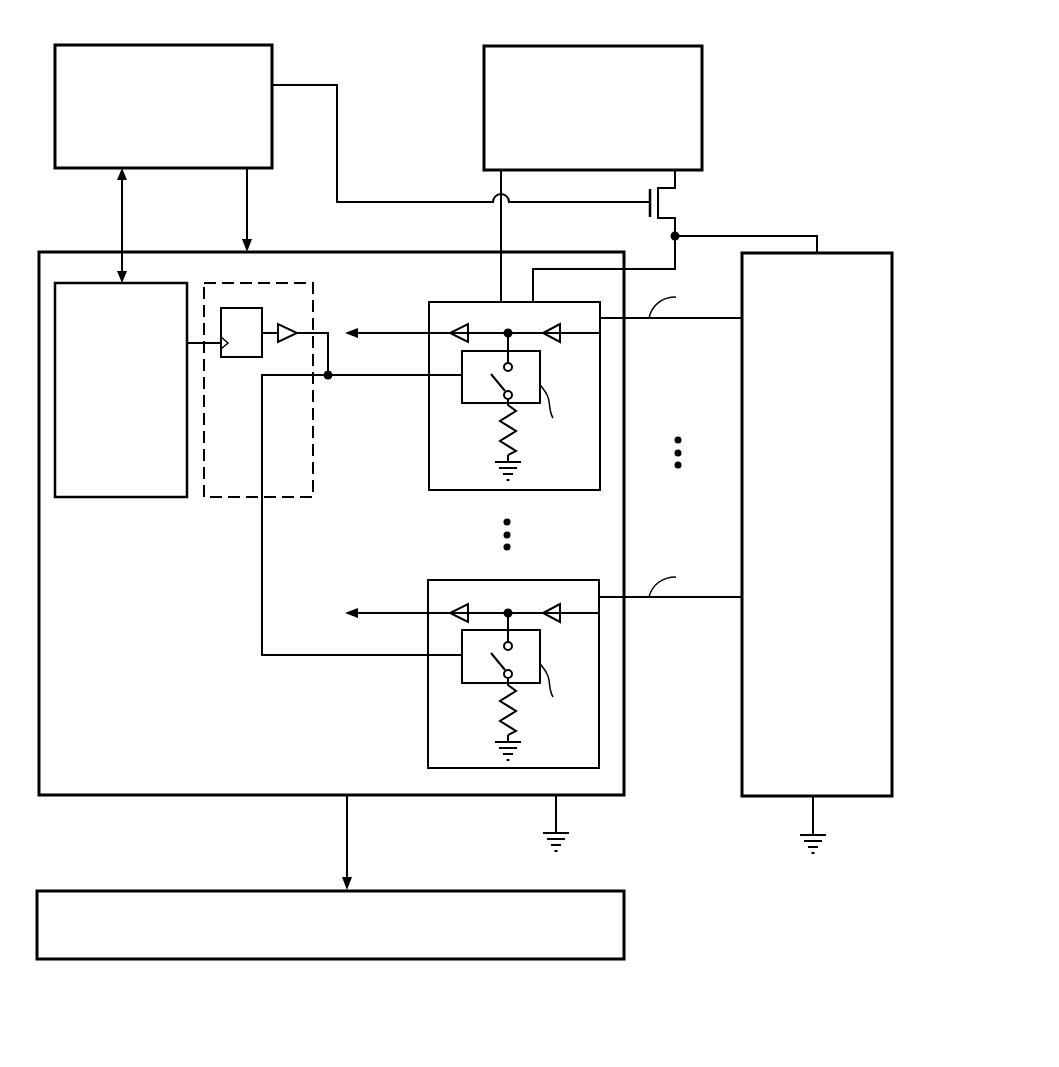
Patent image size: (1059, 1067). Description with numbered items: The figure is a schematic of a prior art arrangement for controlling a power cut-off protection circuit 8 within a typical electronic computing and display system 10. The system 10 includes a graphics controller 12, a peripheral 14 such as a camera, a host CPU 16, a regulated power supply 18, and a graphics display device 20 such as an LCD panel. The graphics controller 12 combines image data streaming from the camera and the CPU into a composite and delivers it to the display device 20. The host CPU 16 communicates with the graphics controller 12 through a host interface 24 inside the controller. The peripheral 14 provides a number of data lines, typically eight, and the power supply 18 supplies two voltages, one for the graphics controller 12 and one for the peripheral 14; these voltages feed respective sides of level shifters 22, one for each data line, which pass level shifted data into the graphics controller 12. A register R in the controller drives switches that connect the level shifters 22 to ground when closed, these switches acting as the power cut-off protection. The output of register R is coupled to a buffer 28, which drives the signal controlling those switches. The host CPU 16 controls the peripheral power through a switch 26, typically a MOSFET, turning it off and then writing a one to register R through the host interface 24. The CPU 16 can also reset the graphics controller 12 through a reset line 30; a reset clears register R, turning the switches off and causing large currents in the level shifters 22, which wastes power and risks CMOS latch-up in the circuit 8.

The power cut-off protection circuit 8 is at (263, 397).
The electronic computing and display system 10 is at (822, 36).
The graphics controller 12 is at (331, 551).
The peripheral 14 is at (817, 553).
The host CPU 16 is at (163, 106).
The regulated power supply 18 is at (593, 108).
The graphics display device 20 is at (330, 877).
The level shifters 22 is at (543, 527).
The host interface 24 is at (121, 390).
The switch 26 is at (690, 190).
The buffer 28 is at (288, 321).
The reset line 30 is at (245, 189).